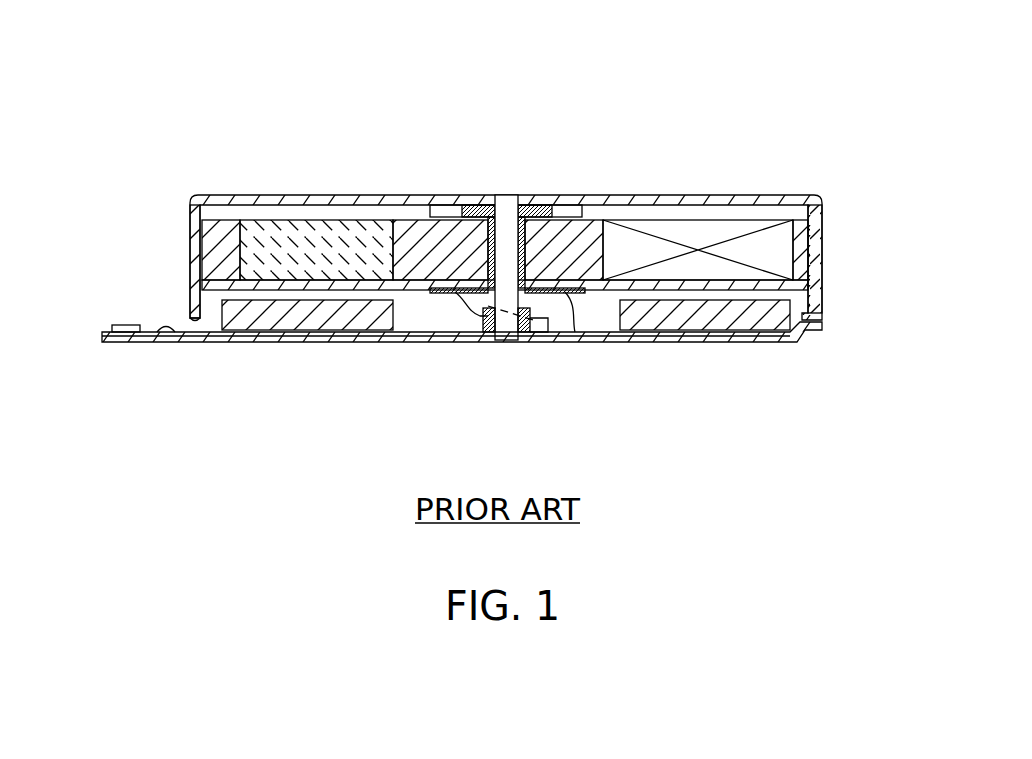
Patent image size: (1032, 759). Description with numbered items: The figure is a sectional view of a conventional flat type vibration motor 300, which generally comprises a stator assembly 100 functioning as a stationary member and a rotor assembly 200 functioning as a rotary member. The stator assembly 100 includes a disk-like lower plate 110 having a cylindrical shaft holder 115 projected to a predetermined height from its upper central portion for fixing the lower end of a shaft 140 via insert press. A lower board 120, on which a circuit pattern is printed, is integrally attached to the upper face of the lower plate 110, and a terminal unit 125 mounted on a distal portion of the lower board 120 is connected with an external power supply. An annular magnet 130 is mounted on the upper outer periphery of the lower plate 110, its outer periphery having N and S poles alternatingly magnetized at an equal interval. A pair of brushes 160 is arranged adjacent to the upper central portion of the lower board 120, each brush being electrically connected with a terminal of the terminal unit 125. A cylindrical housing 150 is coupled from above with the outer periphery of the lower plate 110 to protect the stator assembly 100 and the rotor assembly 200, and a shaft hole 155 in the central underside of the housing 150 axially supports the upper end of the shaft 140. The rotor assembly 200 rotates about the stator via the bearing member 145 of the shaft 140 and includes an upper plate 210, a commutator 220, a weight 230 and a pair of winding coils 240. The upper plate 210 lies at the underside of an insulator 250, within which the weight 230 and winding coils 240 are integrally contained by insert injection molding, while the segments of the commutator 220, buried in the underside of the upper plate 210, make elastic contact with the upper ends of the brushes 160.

The flat type vibration motor 300 is at (802, 81).
The stator assembly 100 is at (800, 388).
The lower plate 110 is at (326, 340).
The shaft holder 115 is at (473, 317).
The lower board 120 is at (163, 328).
The terminal unit 125 is at (113, 325).
The magnet 130 is at (714, 327).
The shaft 140 is at (500, 243).
The bearing member 145 is at (533, 227).
The housing 150 is at (824, 207).
The shaft hole 155 is at (504, 195).
The brushes 160 is at (428, 338).
The rotor assembly 200 is at (220, 214).
The upper plate 210 is at (808, 300).
The commutator 220 is at (563, 295).
The weight 230 is at (301, 222).
The winding coils 240 is at (708, 226).
The insulator 250 is at (412, 228).